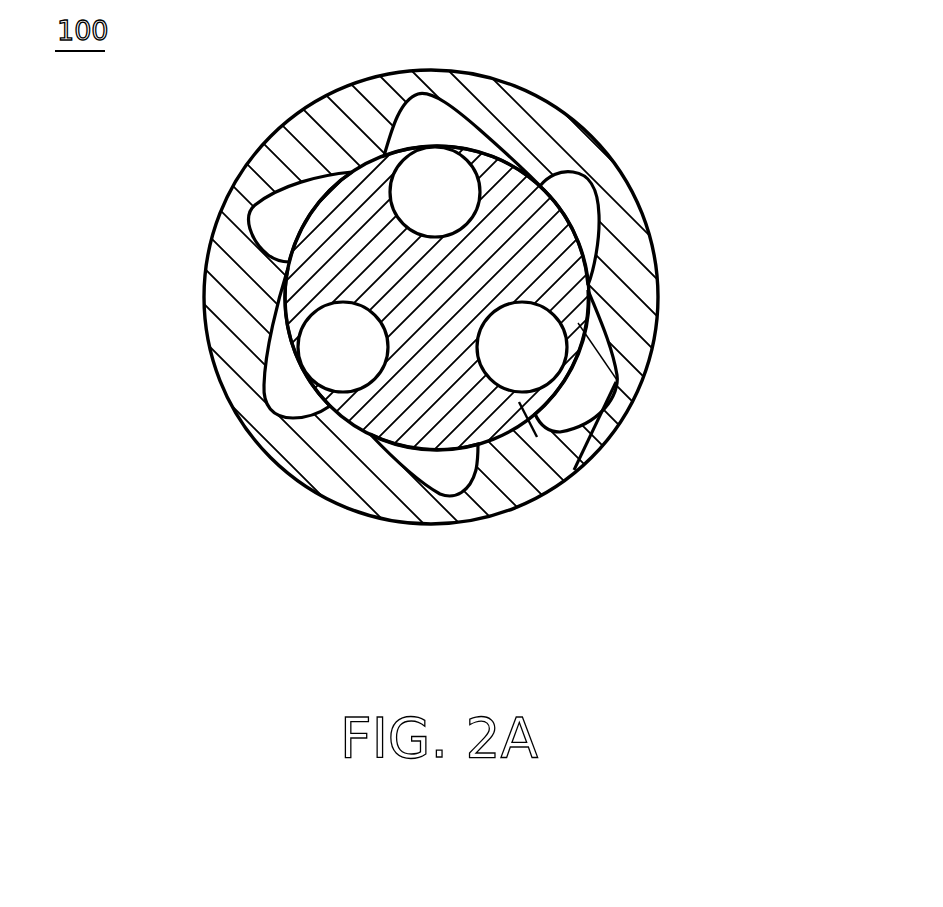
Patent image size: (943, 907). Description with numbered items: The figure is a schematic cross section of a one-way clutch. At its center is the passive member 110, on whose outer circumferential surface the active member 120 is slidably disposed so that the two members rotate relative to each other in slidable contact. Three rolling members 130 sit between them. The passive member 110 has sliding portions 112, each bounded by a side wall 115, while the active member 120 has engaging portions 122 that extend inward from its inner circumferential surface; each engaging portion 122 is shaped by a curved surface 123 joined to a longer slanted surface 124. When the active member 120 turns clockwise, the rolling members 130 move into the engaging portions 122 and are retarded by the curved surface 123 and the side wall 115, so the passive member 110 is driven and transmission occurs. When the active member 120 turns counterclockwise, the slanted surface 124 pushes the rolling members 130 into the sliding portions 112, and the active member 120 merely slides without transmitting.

The passive member 110 is at (533, 276).
The sliding portion 112 is at (384, 152).
The side wall 115 is at (537, 437).
The active member 120 is at (620, 236).
The engaging portion 122 is at (286, 206).
The curved surface 123 is at (615, 362).
The slanted surface 124 is at (589, 422).
The rolling member 130 is at (443, 187).